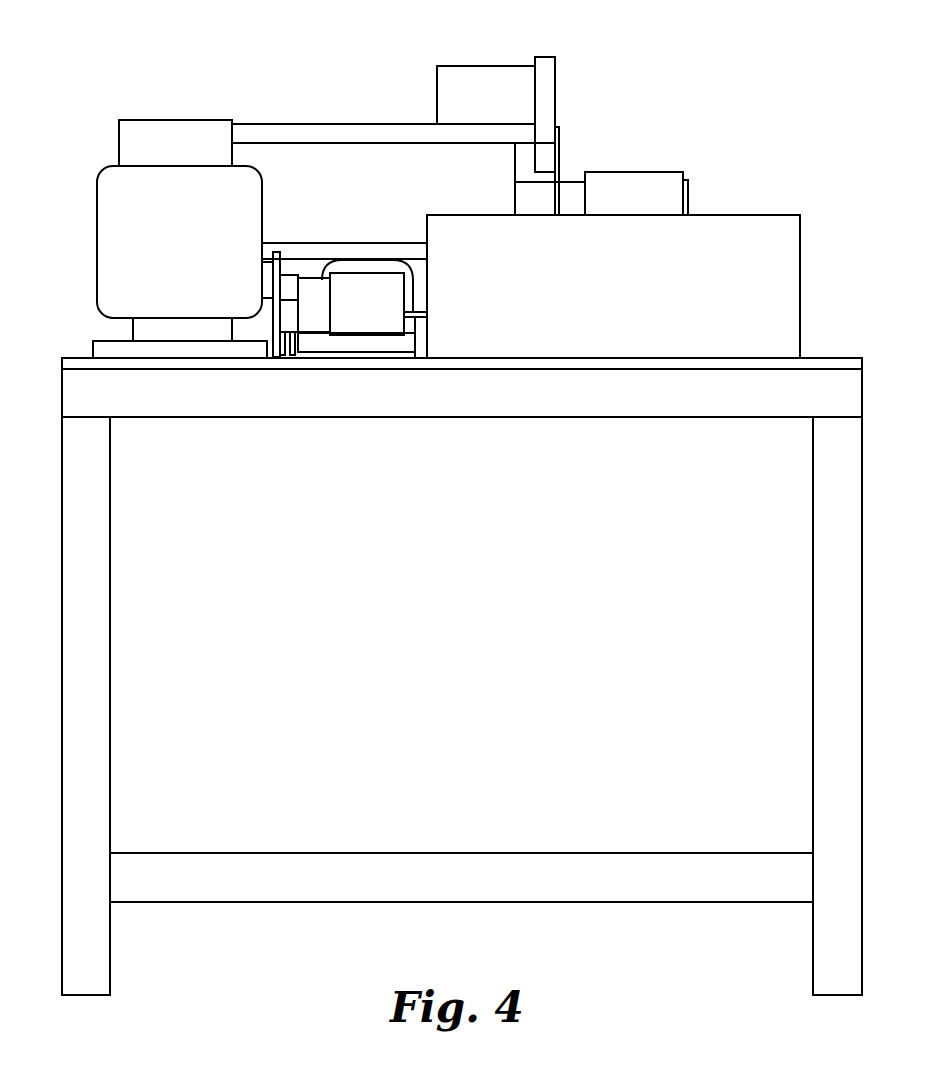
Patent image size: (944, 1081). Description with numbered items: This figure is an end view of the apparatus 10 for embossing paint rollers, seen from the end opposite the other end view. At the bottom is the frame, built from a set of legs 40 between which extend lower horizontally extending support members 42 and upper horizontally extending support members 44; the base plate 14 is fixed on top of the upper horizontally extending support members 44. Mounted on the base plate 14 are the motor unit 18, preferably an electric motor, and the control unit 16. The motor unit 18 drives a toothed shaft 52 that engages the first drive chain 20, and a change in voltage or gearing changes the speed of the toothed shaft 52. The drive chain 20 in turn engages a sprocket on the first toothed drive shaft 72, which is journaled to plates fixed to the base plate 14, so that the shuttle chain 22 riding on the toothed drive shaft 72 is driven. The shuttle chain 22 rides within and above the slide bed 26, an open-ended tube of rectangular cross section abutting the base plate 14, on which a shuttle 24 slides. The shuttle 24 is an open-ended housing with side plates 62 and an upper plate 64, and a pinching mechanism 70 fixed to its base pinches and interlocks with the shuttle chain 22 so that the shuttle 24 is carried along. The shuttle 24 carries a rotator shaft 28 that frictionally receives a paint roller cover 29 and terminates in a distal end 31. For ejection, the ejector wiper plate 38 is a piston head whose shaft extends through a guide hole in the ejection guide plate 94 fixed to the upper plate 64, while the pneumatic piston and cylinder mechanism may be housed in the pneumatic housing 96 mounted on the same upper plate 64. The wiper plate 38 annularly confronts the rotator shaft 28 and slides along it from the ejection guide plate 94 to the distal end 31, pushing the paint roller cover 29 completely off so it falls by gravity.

The apparatus for embossing paint rollers 10 is at (655, 58).
The base plate 14 is at (825, 358).
The control unit 16 is at (601, 295).
The motor unit 18 is at (192, 157).
The first drive chain 20 is at (275, 328).
The shuttle chain 22 is at (384, 316).
The shuttle 24 is at (336, 123).
The slide bed 26 is at (416, 355).
The rotator shaft 28 is at (688, 182).
The paint roller cover 29 is at (648, 172).
The distal end of rotatable shaft 31 is at (688, 200).
The ejector wiper plate 38 is at (560, 138).
The leg 40 is at (110, 745).
The lower horizontally extending support member 42 is at (150, 853).
The upper horizontally extending support member 44 is at (598, 407).
The toothed shaft 52 is at (273, 295).
The side plate 62 is at (364, 195).
The upper plate 64 is at (292, 123).
The pinching mechanism 70 is at (413, 282).
The first toothed drive shaft 72 is at (318, 333).
The ejection guide plate 94 is at (555, 72).
The pneumatic housing 96 is at (472, 65).